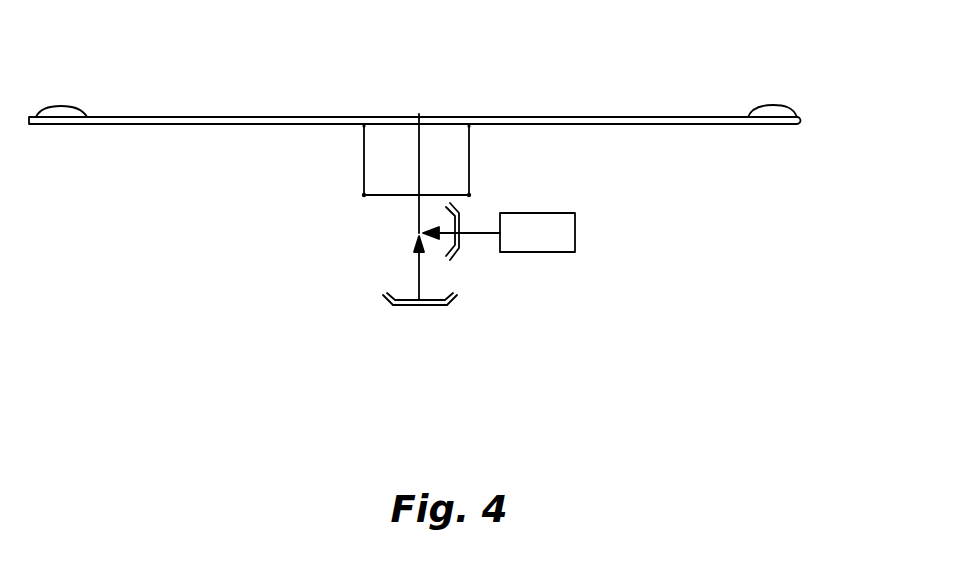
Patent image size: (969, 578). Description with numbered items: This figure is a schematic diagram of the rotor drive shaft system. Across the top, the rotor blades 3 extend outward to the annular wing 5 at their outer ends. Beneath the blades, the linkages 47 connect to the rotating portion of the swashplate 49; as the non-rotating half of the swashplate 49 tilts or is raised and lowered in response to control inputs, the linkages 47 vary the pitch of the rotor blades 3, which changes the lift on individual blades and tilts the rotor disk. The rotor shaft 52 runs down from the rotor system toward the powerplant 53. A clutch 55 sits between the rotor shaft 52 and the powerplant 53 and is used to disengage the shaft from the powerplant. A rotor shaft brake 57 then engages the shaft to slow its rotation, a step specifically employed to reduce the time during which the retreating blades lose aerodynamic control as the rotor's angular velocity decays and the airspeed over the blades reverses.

The rotor blade 3 is at (248, 117).
The annular wing 5 is at (797, 112).
The linkage 47 is at (364, 170).
The swashplate 49 is at (430, 195).
The rotor shaft 52 is at (418, 212).
The powerplant 53 is at (542, 252).
The clutch 55 is at (461, 262).
The rotor shaft brake 57 is at (418, 311).